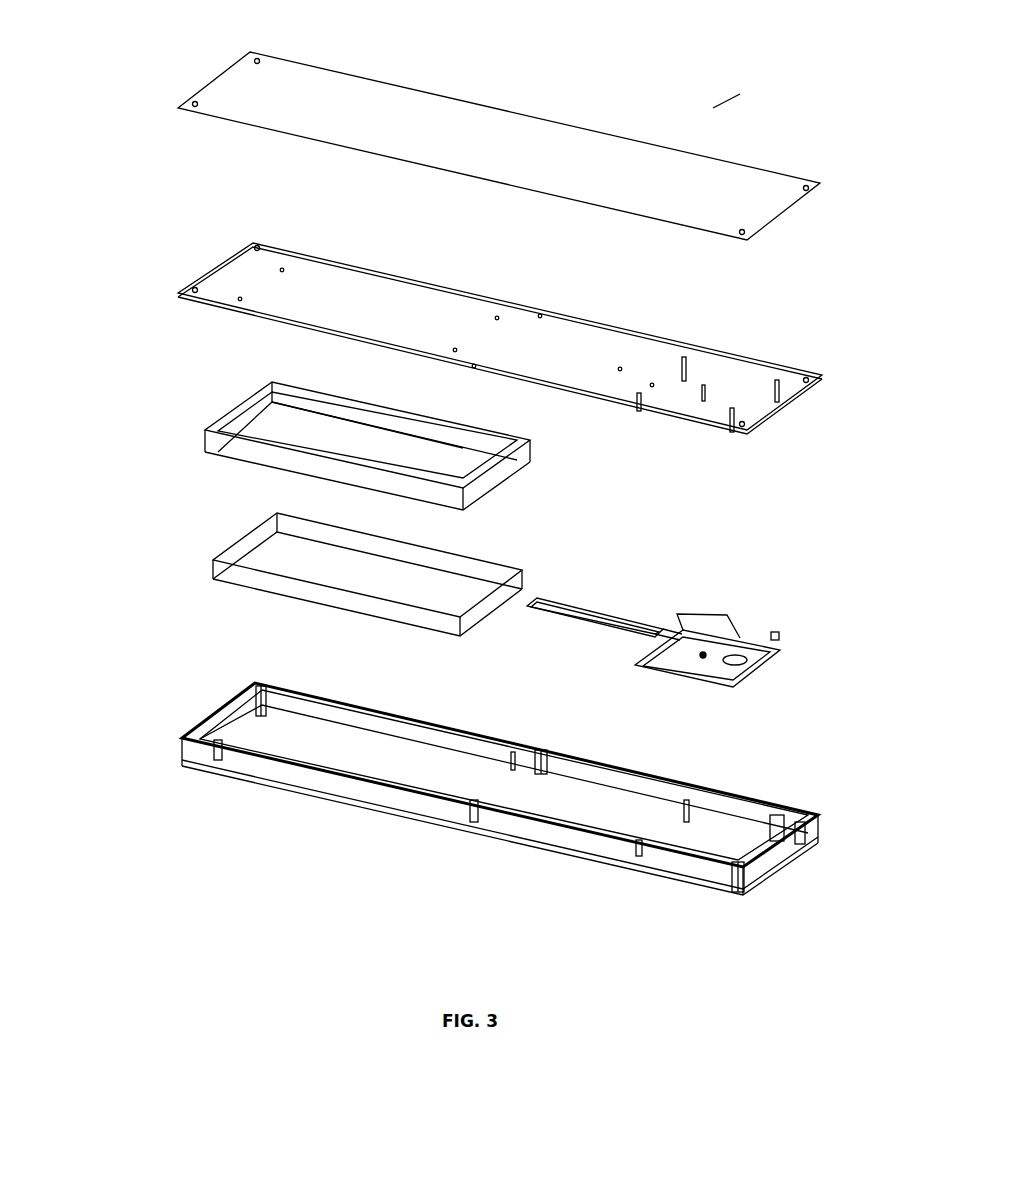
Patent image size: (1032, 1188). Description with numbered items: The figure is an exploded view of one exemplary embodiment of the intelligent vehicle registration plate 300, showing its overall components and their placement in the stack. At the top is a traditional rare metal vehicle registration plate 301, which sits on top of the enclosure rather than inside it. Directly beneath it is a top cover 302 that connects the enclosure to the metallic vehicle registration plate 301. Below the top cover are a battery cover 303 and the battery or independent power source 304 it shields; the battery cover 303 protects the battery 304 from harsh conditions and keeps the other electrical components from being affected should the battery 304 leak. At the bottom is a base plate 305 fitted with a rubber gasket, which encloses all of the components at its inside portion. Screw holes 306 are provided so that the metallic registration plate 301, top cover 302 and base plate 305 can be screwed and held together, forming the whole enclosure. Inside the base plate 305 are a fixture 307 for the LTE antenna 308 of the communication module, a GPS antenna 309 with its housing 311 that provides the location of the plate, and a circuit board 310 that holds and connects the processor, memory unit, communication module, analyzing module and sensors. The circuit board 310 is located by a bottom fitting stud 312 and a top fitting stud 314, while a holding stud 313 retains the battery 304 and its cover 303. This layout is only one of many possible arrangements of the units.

The keyboard assembly 300 is at (718, 105).
The metallic vehicle registration plate 301 is at (168, 105).
The top cover 302 is at (168, 294).
The battery cover 303 is at (198, 428).
The battery/independent power source 304 is at (205, 559).
The base plate 305 is at (222, 700).
The screw holes 306 is at (216, 701).
The fixture 307 is at (577, 606).
The LTE antenna 308 is at (650, 628).
The GPS antenna 309 is at (776, 631).
The circuit board 310 is at (788, 665).
The housing 311 is at (786, 836).
The bottom fitting stud 312 is at (687, 818).
The holding stud 313 is at (513, 768).
The top fitting stud 314 is at (730, 455).